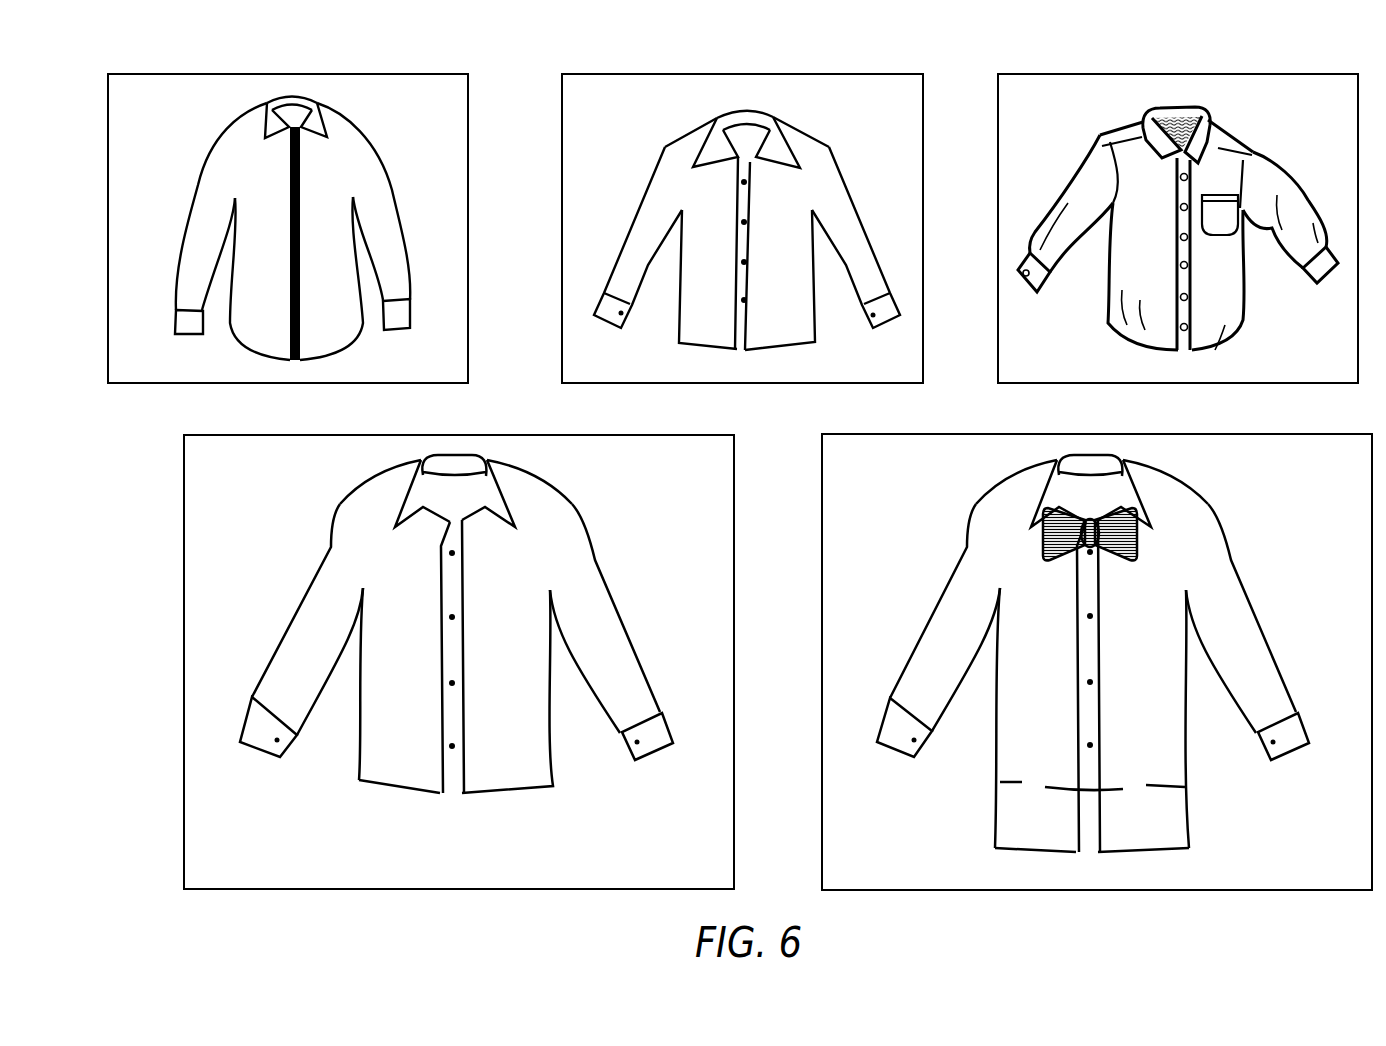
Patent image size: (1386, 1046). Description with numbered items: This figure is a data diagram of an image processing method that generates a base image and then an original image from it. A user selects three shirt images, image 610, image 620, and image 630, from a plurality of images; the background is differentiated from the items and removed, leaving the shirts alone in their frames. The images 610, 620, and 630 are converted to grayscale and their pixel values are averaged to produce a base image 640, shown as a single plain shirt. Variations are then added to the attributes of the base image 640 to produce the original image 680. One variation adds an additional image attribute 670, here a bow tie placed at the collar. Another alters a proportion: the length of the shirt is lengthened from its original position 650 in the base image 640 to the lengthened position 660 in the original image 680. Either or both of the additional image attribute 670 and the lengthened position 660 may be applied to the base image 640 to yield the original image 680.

The image 610 is at (167, 110).
The image 620 is at (641, 110).
The image 630 is at (1064, 110).
The base image 640 is at (177, 530).
The original position 650 is at (372, 790).
The lengthened position 660 is at (1016, 853).
The additional image attribute 670 is at (1040, 550).
The original image 680 is at (817, 530).